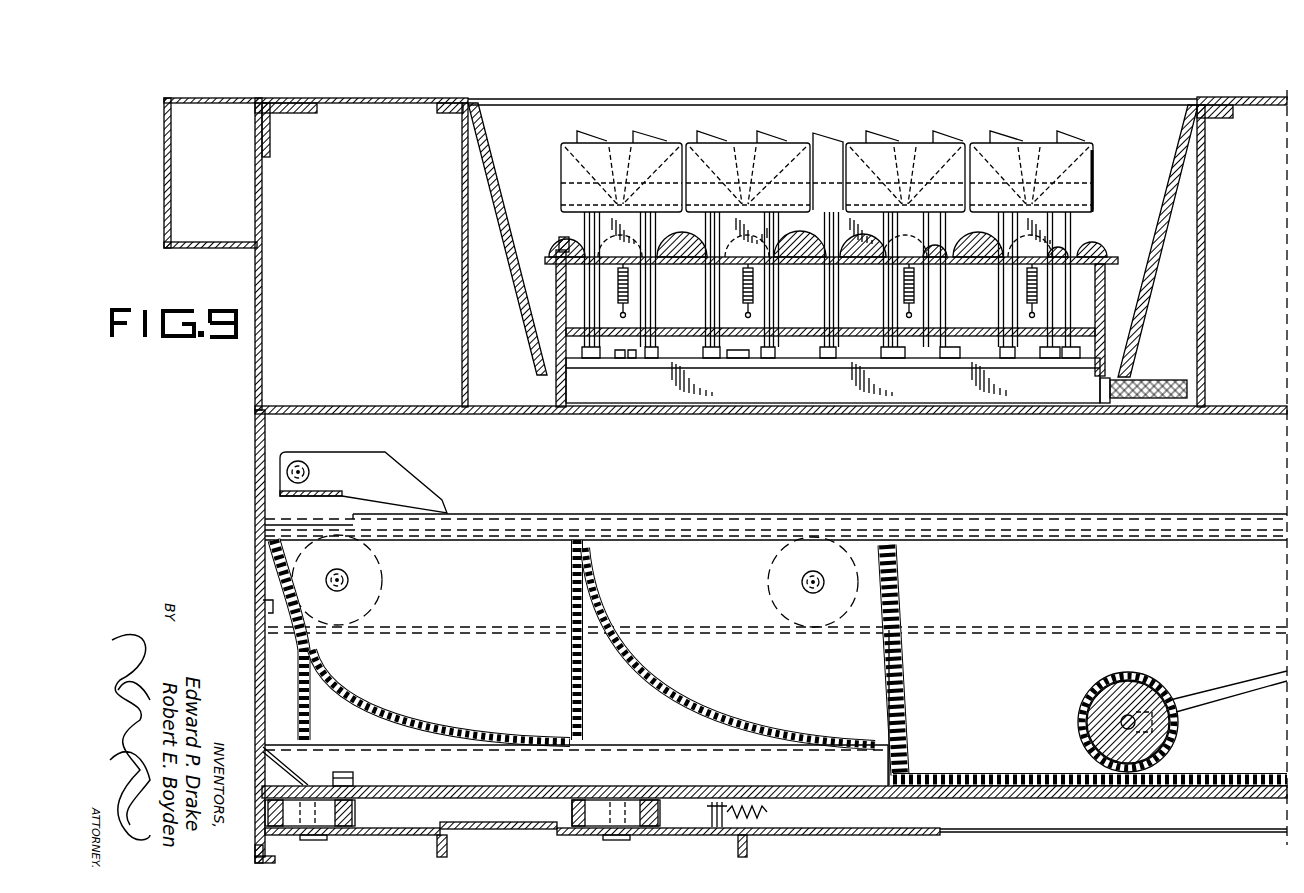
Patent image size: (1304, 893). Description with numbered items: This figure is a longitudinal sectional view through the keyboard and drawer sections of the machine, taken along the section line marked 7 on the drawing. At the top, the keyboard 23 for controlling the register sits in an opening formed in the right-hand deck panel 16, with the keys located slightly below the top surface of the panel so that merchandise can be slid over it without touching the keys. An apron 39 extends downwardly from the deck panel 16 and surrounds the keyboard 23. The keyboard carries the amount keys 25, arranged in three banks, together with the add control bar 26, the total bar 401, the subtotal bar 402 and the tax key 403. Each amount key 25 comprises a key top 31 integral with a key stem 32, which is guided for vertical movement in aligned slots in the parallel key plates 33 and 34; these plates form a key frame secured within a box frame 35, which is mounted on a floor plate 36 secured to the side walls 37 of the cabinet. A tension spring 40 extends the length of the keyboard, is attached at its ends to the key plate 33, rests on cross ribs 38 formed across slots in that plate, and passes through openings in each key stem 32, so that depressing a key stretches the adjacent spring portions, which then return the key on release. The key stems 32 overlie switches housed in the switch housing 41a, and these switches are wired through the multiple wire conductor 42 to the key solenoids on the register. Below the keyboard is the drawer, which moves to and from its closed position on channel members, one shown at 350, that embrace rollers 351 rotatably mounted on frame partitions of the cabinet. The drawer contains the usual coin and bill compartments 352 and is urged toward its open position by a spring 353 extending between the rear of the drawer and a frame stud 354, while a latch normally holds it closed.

The section line 7- 7 is at (433, 122).
The right-hand deck panel 16 is at (1257, 100).
The keyboard 23 is at (827, 163).
The amount keys 25 is at (940, 148).
The add control bar 26 is at (1040, 148).
The key top 31 is at (1000, 143).
The key stem 32 is at (947, 227).
The key plate 33 is at (550, 259).
The key plate 34 is at (576, 328).
The box frame 35 is at (553, 347).
The floor plate 36 is at (489, 406).
The side wall 37 is at (262, 373).
The cross ribs 38 is at (683, 265).
The apron 39 is at (505, 228).
The tension spring 40 is at (683, 247).
The switch housing 41a is at (1052, 392).
The multiple wire conductor 42 is at (1157, 388).
The total bar 401 is at (858, 150).
The subtotal bar 402 is at (797, 150).
The tax key 403 is at (622, 150).
The channel member 350 is at (1003, 626).
The rollers 351 is at (385, 590).
The coin and bill compartments 352 is at (518, 563).
The spring 353 is at (756, 829).
The frame stud 354 is at (708, 812).